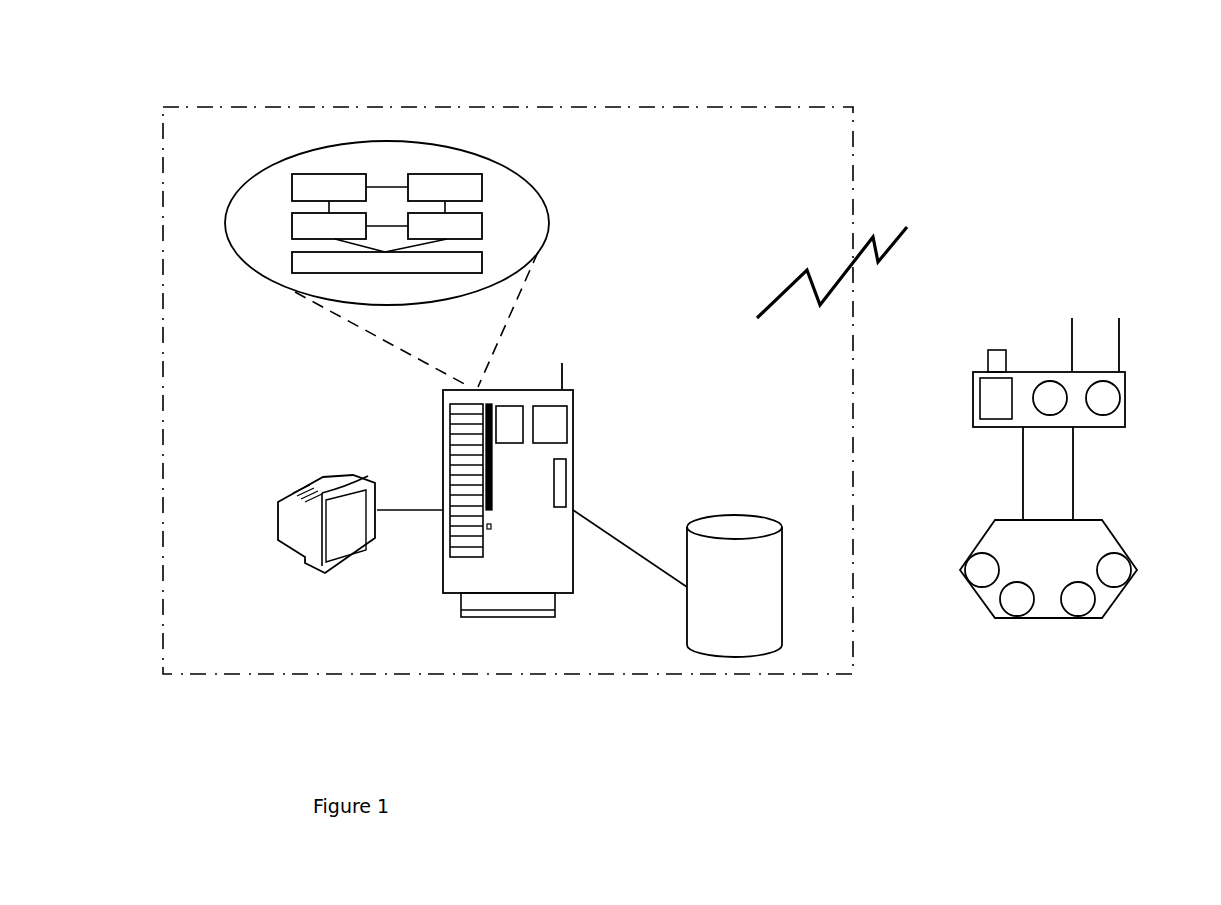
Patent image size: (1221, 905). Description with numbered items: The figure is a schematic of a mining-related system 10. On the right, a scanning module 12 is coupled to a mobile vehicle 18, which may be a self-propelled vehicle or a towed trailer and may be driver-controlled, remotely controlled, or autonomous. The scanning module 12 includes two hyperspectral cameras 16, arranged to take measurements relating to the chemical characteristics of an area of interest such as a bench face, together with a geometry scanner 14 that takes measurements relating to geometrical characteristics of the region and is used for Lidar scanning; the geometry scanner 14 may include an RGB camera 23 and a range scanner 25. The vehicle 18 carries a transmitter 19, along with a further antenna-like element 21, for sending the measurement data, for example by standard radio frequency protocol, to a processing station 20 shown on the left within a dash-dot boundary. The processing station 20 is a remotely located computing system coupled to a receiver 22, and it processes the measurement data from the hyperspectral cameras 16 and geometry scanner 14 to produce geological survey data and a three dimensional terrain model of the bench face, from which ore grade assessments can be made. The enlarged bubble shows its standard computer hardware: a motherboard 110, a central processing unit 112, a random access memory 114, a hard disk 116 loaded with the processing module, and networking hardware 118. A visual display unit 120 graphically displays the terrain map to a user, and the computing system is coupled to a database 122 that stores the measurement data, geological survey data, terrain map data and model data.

The system 10 is at (910, 705).
The scanning module 12 is at (966, 417).
The geometry scanner 14 is at (1014, 356).
The hyperspectral cameras 16 is at (1121, 398).
The mobile vehicle 18 is at (1142, 567).
The transmitter 19 is at (1075, 317).
The processing station 20 is at (544, 90).
The antenna 21 is at (1122, 330).
The receiver 22 is at (563, 375).
The RGB camera 23 is at (986, 353).
The range scanner 25 is at (980, 397).
The motherboard 110 is at (387, 263).
The central processing unit 112 is at (445, 187).
The random access memory 114 is at (329, 226).
The hard disk 116 is at (445, 226).
The networking hardware 118 is at (329, 187).
The visual display unit 120 is at (302, 487).
The database 122 is at (720, 513).